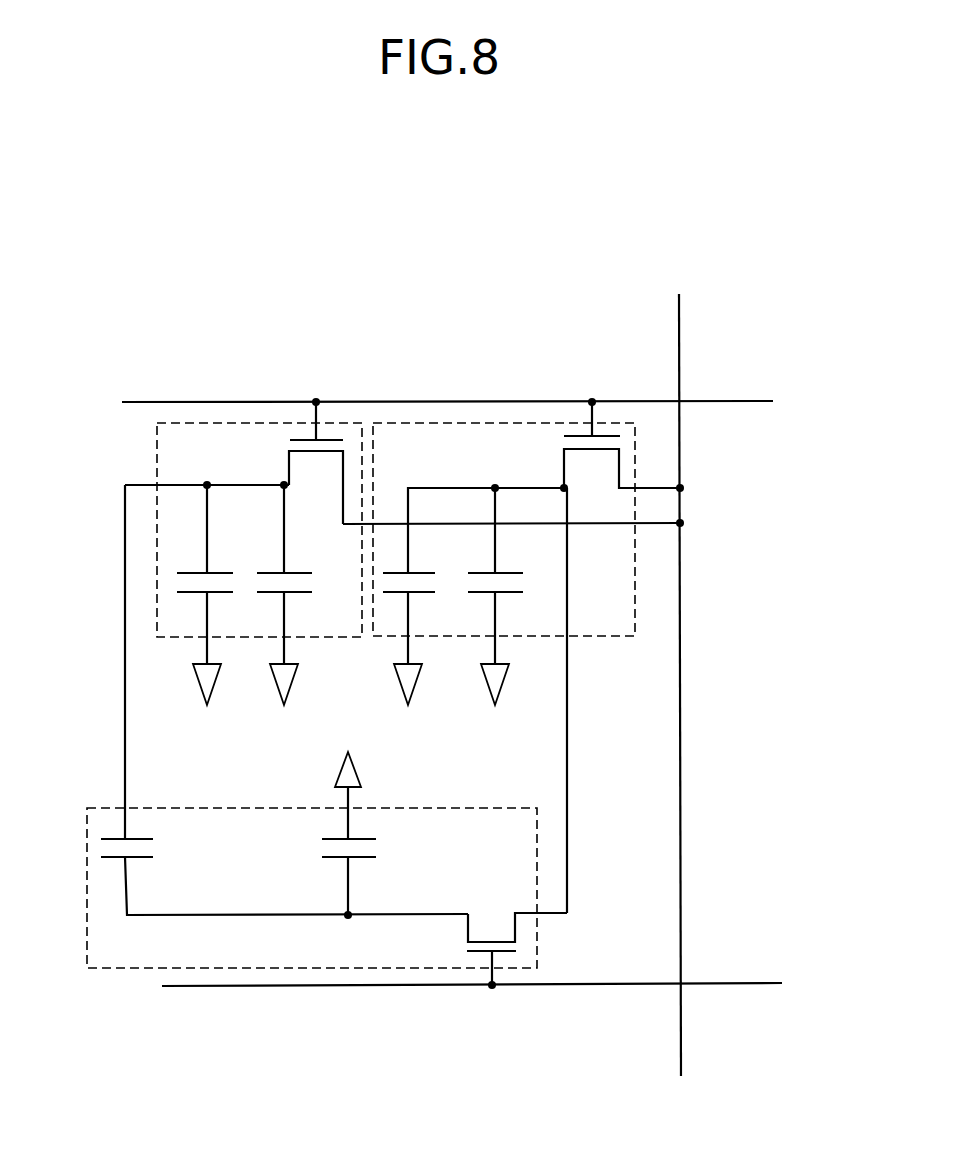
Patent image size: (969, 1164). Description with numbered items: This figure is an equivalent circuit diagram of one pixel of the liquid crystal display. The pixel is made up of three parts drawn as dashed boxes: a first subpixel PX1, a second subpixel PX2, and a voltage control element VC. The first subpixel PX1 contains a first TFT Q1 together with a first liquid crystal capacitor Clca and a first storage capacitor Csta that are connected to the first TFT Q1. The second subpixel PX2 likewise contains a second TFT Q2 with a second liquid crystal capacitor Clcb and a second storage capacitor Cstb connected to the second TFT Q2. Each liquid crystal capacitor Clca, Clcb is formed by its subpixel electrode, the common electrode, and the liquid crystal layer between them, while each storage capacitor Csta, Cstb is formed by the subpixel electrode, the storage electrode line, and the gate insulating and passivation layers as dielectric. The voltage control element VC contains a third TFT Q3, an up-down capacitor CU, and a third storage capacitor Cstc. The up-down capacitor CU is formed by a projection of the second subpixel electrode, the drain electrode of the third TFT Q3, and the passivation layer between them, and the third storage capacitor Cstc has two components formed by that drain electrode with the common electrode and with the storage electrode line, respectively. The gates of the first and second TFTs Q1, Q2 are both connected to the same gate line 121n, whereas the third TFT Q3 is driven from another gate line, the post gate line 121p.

The gate line 121n is at (481, 398).
The post gate line 121p is at (504, 980).
The first subpixel PX1 is at (602, 636).
The second subpixel PX2 is at (157, 447).
The voltage control element VC is at (130, 969).
The first TFT Q1 is at (622, 445).
The second TFT Q2 is at (316, 463).
The third TFT Q3 is at (517, 945).
The first liquid crystal capacitor Clca is at (422, 639).
The first storage capacitor Csta is at (508, 624).
The second liquid crystal capacitor Clcb is at (218, 639).
The second storage capacitor Cstb is at (299, 624).
The up-down capacitor CU is at (147, 850).
The third storage capacitor Cstc is at (375, 833).